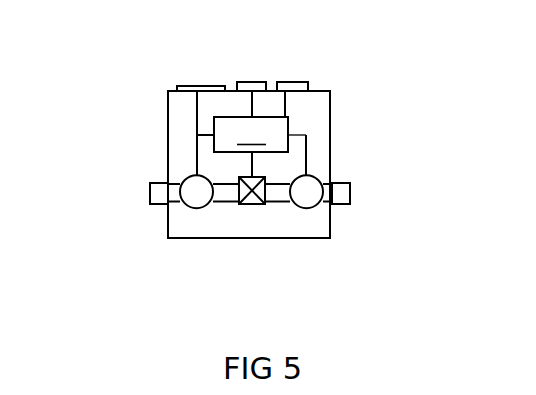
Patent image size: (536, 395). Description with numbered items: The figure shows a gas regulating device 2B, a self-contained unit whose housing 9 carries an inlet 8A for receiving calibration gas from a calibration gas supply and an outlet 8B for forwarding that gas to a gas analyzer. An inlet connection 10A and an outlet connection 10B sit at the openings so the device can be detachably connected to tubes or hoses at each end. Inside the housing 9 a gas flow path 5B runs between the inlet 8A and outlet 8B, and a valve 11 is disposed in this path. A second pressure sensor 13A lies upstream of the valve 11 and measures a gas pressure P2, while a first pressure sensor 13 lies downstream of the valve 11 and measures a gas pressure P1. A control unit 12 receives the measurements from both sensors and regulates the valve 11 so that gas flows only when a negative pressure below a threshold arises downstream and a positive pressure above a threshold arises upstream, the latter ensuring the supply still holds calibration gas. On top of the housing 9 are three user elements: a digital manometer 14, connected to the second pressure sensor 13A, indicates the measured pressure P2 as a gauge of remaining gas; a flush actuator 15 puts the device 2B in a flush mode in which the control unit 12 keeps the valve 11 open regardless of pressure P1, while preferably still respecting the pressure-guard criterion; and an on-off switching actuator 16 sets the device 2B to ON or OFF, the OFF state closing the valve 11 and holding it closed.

The gas regulating device 2B is at (150, 90).
The housing 9 is at (288, 145).
The manometer 14 is at (178, 93).
The flush actuator 15 is at (225, 94).
The on-off switching actuator 16 is at (319, 64).
The control unit 12 is at (251, 146).
The gas flow path 5B is at (250, 257).
The inlet connection 10A is at (126, 210).
The outlet connection 10B is at (369, 217).
The inlet 8A is at (130, 161).
The outlet 8B is at (375, 153).
The second pressure sensor 13A is at (168, 228).
The first pressure sensor 13 is at (326, 228).
The valve 11 is at (271, 237).